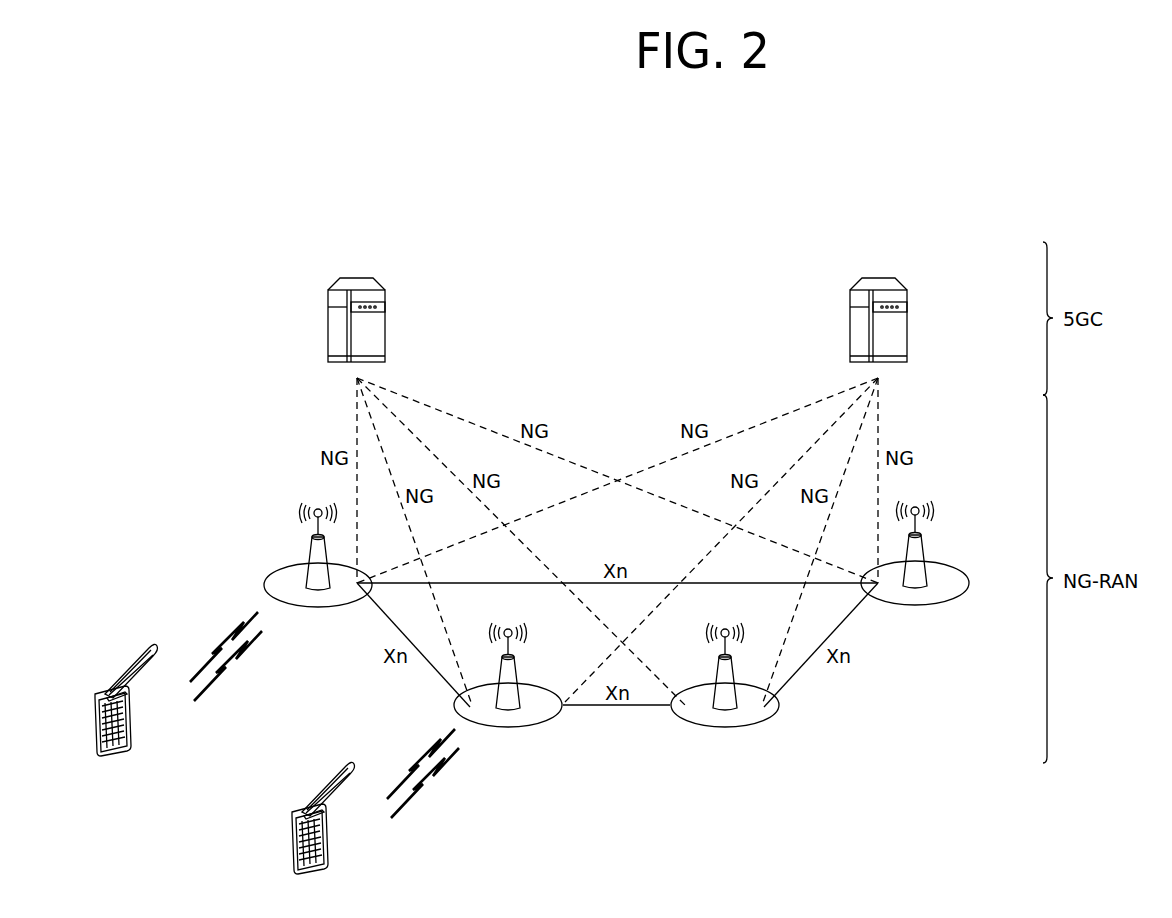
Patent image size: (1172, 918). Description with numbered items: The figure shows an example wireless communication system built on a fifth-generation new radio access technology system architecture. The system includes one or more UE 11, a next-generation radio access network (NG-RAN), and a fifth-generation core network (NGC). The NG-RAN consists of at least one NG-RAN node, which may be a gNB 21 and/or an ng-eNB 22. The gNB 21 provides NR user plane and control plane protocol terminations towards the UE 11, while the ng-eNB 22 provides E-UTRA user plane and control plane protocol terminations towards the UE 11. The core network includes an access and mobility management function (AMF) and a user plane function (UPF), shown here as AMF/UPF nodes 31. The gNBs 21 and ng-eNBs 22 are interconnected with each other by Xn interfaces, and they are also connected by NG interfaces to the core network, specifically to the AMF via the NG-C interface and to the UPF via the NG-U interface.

The UE 11 is at (136, 658).
The gNB 21 is at (265, 581).
The ng-eNB 22 is at (455, 701).
The AMF/UPF core network node 31 is at (328, 321).